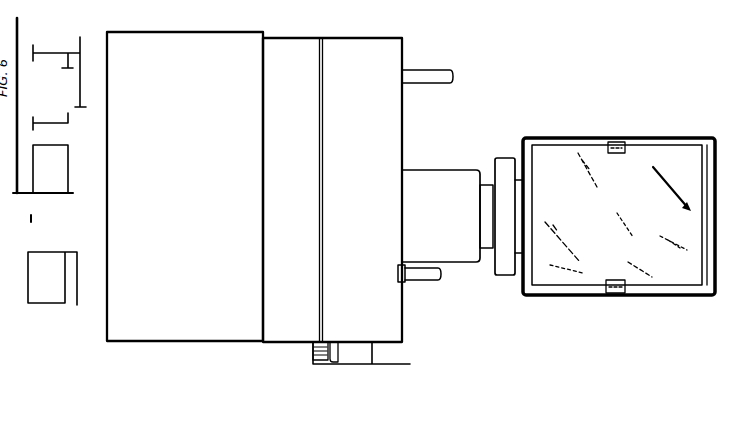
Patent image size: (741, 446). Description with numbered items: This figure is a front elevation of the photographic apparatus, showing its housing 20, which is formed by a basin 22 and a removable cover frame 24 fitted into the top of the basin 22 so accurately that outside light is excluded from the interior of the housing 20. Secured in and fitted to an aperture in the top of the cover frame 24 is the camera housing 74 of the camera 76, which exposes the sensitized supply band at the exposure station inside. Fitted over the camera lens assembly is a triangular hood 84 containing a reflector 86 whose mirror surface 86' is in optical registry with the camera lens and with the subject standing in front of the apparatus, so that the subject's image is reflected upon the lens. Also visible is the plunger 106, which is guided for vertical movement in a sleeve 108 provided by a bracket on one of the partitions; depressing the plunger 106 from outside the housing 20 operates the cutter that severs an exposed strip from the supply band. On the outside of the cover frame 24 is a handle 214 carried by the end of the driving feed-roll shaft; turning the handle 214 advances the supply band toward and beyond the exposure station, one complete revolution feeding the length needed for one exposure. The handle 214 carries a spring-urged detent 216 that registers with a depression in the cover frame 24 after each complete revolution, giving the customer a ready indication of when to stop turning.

The housing 20 is at (416, 25).
The basin 22 is at (173, 347).
The cover frame 24 is at (406, 326).
The camera housing 74 is at (445, 176).
The camera 76 is at (502, 291).
The hood 84 is at (667, 297).
The reflector 86 is at (631, 227).
The mirror surface 86' is at (695, 236).
The plunger 106 is at (437, 276).
The sleeve 108 is at (403, 281).
The handle 214 is at (353, 363).
The detent 216 is at (312, 345).